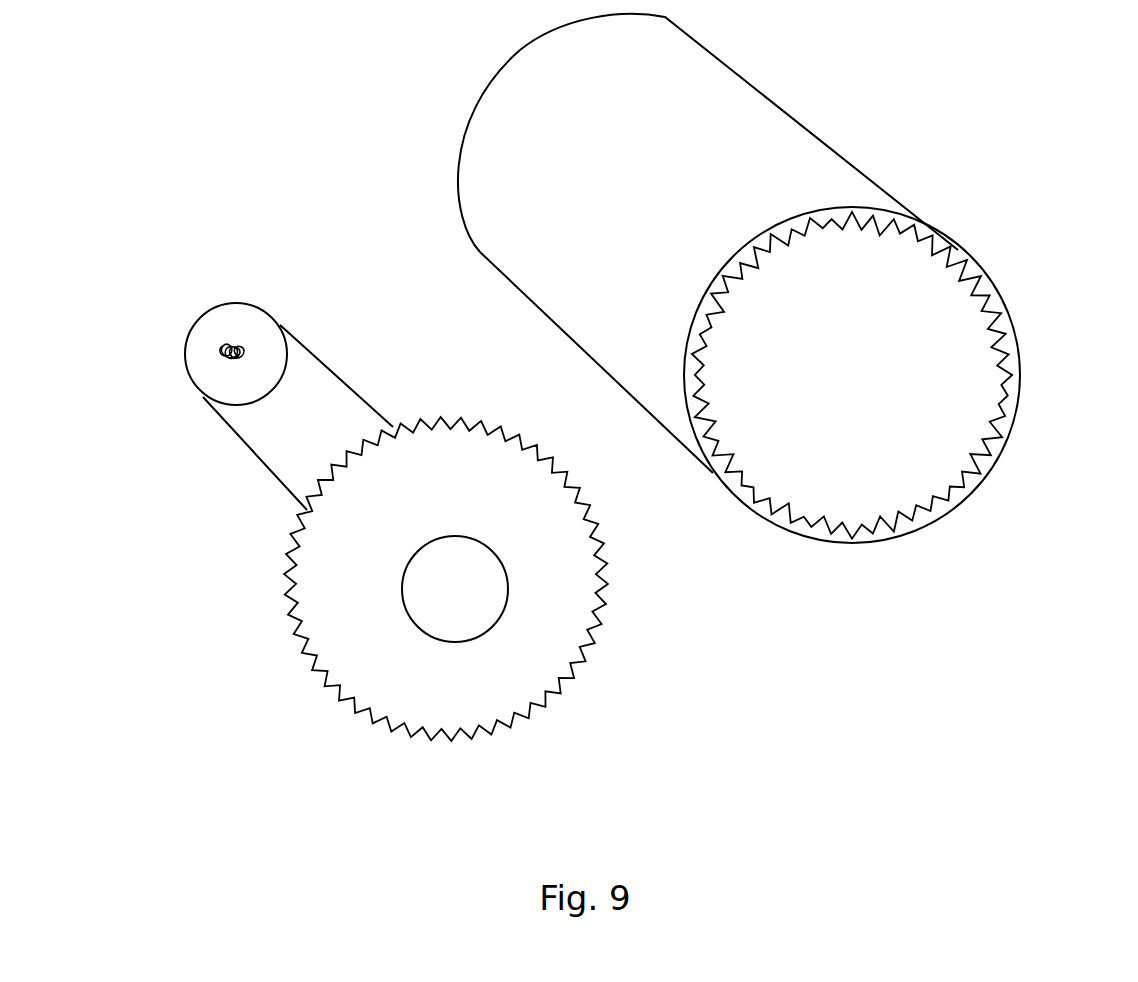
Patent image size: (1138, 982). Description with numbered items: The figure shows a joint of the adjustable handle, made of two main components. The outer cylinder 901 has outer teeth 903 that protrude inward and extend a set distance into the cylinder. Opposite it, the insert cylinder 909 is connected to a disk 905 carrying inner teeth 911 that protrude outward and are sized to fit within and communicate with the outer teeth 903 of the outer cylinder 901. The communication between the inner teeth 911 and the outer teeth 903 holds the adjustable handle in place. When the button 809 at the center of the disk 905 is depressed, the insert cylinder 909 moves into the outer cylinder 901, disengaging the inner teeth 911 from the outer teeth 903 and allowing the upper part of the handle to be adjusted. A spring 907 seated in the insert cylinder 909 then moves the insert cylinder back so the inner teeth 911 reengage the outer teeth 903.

The outer cylinder 901 is at (808, 153).
The outer teeth 903 is at (1007, 313).
The disk 905 is at (563, 564).
The inner teeth 911 is at (600, 629).
The button 809 is at (435, 607).
The insert cylinder 909 is at (245, 441).
The spring 907 is at (230, 340).